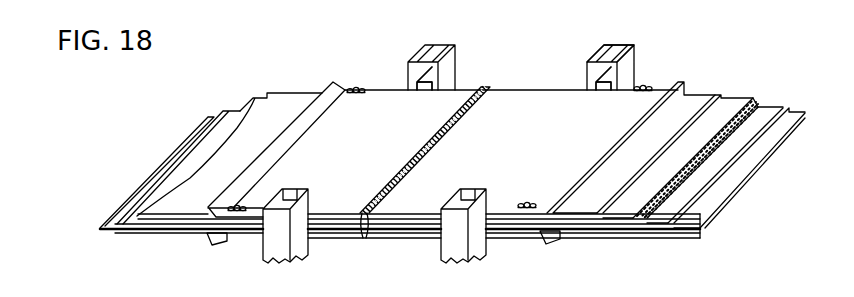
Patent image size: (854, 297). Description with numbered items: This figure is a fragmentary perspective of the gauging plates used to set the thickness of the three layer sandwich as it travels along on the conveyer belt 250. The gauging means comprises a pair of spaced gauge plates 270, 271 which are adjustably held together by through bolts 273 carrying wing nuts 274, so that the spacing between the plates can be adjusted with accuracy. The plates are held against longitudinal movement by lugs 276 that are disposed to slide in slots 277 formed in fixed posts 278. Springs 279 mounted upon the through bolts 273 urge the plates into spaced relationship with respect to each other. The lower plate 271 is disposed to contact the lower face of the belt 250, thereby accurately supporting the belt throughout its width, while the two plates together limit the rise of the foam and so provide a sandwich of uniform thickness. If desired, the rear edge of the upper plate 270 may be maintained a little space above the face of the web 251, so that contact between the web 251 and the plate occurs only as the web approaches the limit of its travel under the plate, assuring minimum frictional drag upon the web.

The conveyer belt 250 is at (106, 229).
The web 251 is at (703, 95).
The gauge plate 270 is at (480, 87).
The gauge plate 271 is at (355, 238).
The through bolt 273 is at (525, 201).
The wing nut 274 is at (367, 94).
The lug 276 is at (427, 82).
The slot 277 is at (610, 55).
The fixed post 278 is at (449, 42).
The spring 279 is at (240, 229).